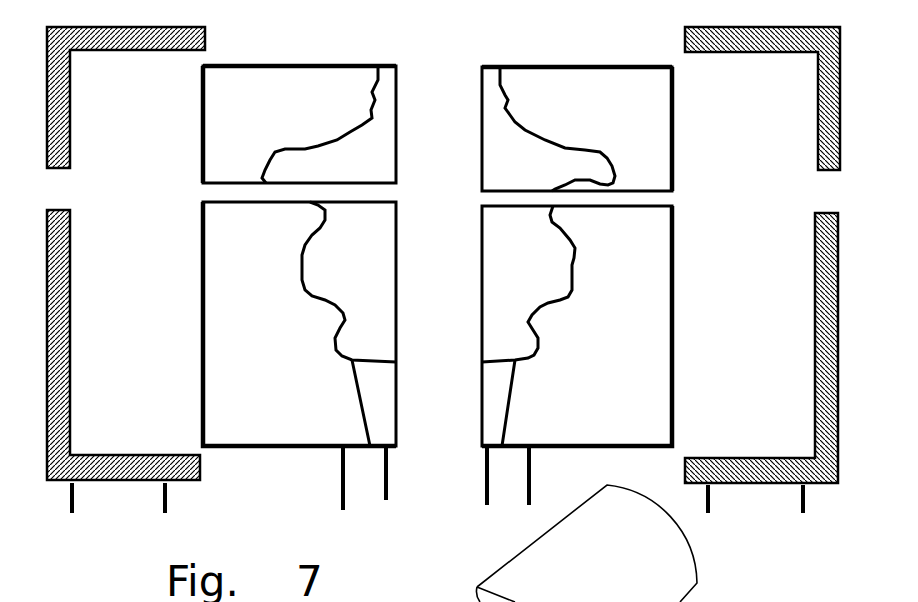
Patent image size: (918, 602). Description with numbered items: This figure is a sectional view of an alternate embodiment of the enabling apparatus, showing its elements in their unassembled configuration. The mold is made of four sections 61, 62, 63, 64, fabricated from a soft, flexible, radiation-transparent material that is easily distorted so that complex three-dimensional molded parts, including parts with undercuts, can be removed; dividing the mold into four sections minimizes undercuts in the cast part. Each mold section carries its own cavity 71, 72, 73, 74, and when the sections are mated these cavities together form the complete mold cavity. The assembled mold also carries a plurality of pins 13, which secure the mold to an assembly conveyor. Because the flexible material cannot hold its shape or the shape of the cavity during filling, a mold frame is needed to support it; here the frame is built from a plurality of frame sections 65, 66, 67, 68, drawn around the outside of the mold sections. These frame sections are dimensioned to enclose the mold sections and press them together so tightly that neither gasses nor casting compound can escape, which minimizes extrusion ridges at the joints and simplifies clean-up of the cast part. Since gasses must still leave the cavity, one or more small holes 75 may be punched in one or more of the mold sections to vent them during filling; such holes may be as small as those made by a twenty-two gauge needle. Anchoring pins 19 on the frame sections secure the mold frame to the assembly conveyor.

The pins 13 is at (484, 482).
The anchoring pins 19 is at (803, 513).
The mold section 61 is at (287, 132).
The mold section 62 is at (640, 123).
The mold section 63 is at (283, 365).
The mold section 64 is at (623, 388).
The mold frame section 65 is at (68, 90).
The mold frame section 66 is at (818, 82).
The mold frame section 67 is at (72, 323).
The mold frame section 68 is at (813, 385).
The cavity 71 is at (377, 171).
The cavity 72 is at (545, 172).
The cavity 73 is at (375, 262).
The cavity 74 is at (548, 257).
The small holes 75 is at (512, 385).